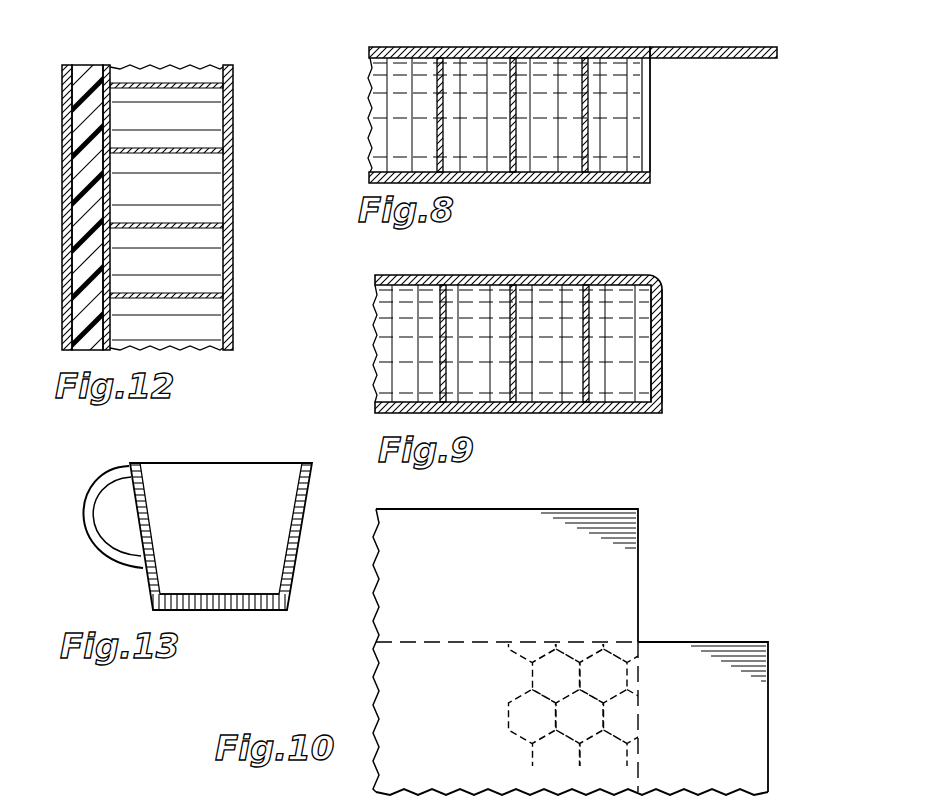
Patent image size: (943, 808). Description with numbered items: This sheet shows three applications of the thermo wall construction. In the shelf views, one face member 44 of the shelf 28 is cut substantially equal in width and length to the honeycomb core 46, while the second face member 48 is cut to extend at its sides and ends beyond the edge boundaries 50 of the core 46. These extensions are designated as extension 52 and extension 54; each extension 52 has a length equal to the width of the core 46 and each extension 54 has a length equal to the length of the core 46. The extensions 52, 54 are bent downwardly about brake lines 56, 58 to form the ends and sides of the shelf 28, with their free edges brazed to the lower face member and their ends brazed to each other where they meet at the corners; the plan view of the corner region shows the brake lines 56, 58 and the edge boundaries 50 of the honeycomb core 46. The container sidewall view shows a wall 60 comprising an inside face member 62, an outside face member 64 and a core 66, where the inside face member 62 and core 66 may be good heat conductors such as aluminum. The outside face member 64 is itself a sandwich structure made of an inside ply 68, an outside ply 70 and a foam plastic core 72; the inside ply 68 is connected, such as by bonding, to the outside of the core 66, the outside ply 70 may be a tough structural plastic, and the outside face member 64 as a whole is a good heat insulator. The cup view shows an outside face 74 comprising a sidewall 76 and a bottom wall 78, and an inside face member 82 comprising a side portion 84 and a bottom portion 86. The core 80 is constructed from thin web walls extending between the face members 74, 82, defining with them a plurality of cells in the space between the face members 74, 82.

In FIG. 8, the shelf 28 is at (383, 48).
In FIG. 9, the shelf 28 is at (364, 399).
In FIG. 8, the face member 44 is at (578, 183).
In FIG. 8, the honeycomb core 46 is at (395, 143).
In FIG. 8, the second face member 48 is at (510, 47).
In FIG. 8, the edge boundaries 50 is at (652, 118).
In FIG. 10, the edge boundaries 50 is at (640, 773).
In FIG. 10, the extension 52 is at (615, 509).
In FIG. 8, the extension 54 is at (731, 47).
In FIG. 9, the extension 54 is at (664, 343).
In FIG. 10, the extension 54 is at (716, 642).
In FIG. 10, the brake line 56 is at (486, 642).
In FIG. 8, the brake line 58 is at (644, 47).
In FIG. 10, the brake line 58 is at (643, 668).
In FIG. 12, the wall 60 is at (235, 133).
In FIG. 12, the inside face member 62 is at (230, 223).
In FIG. 12, the outside face member 64 is at (62, 229).
In FIG. 12, the core 66 is at (203, 328).
In FIG. 12, the inside ply 68 is at (112, 76).
In FIG. 12, the outside ply 70 is at (62, 106).
In FIG. 12, the foam plastic core 72 is at (85, 72).
In FIG. 13, the outside face 74 is at (298, 583).
In FIG. 13, the sidewall 76 is at (305, 525).
In FIG. 13, the bottom wall 78 is at (160, 612).
In FIG. 13, the core 80 is at (250, 601).
In FIG. 13, the inside face member 82 is at (148, 500).
In FIG. 13, the side portion 84 is at (291, 497).
In FIG. 13, the bottom portion 86 is at (205, 600).